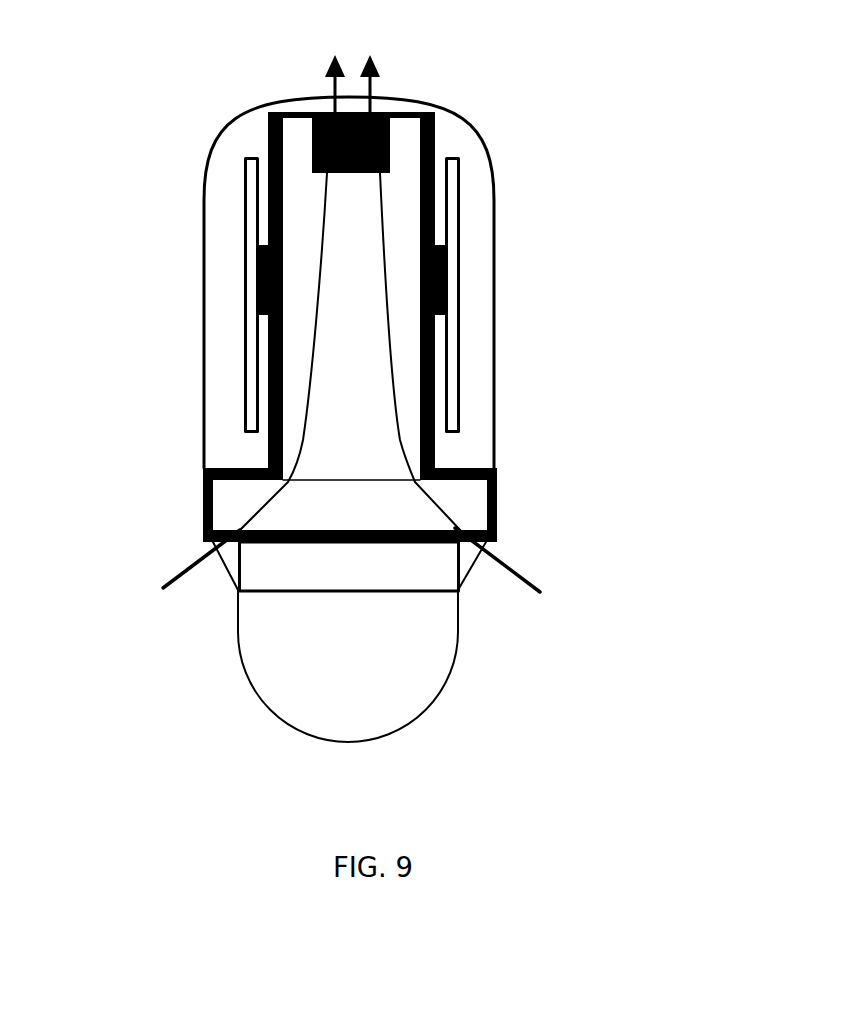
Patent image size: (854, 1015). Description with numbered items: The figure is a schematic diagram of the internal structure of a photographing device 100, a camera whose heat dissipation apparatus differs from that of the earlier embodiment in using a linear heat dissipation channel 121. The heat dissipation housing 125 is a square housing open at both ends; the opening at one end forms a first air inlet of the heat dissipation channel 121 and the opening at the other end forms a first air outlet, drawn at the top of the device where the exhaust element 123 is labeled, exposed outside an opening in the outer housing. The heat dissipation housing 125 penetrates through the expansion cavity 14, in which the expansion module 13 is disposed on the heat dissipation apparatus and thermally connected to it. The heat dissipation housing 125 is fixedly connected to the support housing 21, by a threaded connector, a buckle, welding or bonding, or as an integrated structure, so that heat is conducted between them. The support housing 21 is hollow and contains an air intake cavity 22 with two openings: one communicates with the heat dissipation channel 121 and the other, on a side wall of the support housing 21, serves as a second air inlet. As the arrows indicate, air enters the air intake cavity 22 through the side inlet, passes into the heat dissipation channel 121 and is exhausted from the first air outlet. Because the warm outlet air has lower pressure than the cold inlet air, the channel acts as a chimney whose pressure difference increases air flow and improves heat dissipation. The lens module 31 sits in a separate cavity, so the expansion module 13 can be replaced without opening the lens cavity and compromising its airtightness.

The photographing device 100 is at (143, 56).
The heat dissipation channel 121 is at (300, 150).
The air exhaust opening 123 is at (387, 96).
The heat dissipation housing 125 is at (262, 405).
The expansion module 13 is at (255, 280).
The expansion cavity 14 is at (468, 257).
The support housing 21 is at (500, 500).
The air intake cavity 22 is at (255, 520).
The lens module 31 is at (430, 693).